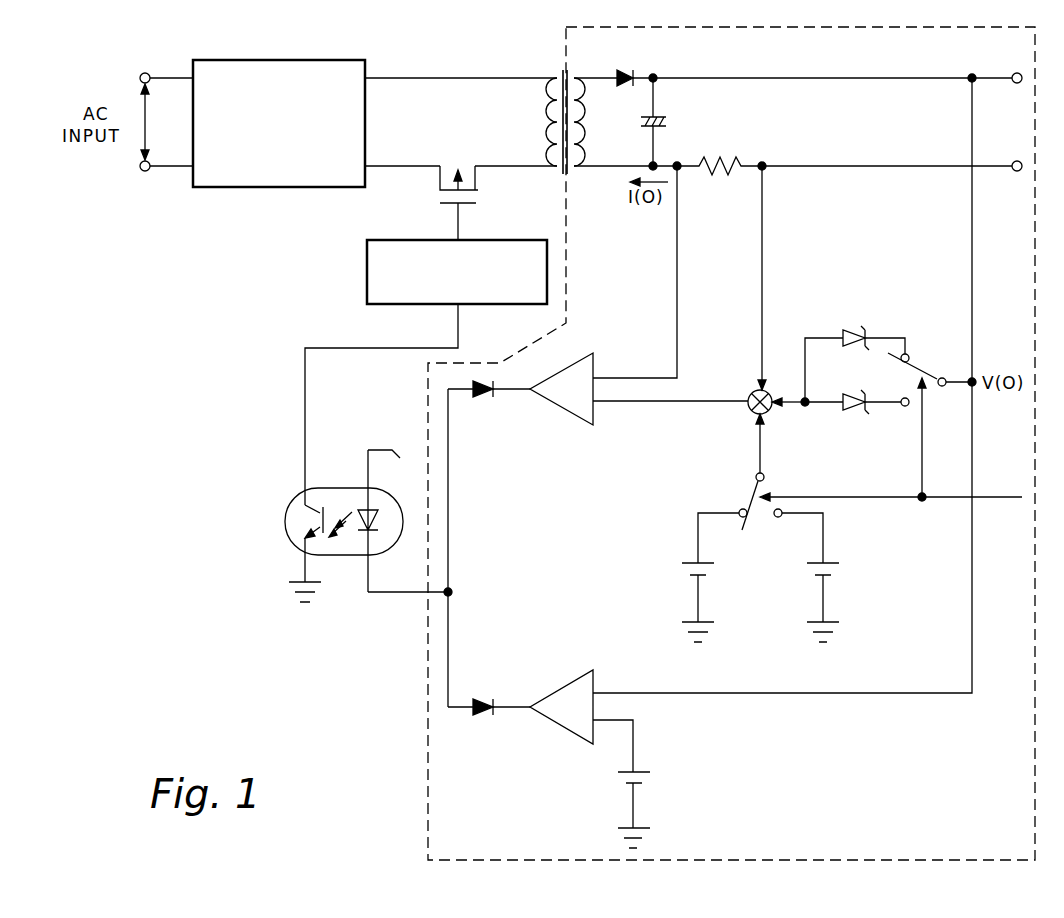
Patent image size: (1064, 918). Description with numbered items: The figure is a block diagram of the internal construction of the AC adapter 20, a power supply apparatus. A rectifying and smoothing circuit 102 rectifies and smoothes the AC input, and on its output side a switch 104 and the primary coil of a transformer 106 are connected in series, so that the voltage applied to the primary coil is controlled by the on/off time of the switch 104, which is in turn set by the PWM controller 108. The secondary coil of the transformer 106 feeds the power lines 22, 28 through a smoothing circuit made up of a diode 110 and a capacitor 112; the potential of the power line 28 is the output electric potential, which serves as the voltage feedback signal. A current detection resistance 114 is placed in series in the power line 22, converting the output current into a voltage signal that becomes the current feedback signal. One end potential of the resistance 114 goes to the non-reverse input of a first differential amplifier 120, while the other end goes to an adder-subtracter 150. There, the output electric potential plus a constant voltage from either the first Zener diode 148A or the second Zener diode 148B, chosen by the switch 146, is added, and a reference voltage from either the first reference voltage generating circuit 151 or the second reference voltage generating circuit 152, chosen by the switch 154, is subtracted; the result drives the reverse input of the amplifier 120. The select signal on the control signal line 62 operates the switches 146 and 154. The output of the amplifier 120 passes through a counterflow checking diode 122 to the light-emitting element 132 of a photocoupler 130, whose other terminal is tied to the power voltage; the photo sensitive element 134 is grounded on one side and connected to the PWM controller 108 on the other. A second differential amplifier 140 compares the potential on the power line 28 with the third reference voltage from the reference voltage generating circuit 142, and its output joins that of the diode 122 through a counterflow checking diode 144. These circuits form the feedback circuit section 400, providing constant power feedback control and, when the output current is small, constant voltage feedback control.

The AC adapter 20 is at (131, 338).
The power line 22 is at (987, 166).
The power line 28 is at (987, 78).
The control signal line 62 is at (984, 498).
The rectifying and smoothing circuit 102 is at (245, 187).
The switch 104 is at (440, 203).
The transformer 106 is at (557, 172).
The PWM controller 108 is at (367, 287).
The diode 110 is at (626, 70).
The capacitor 112 is at (662, 116).
The current detection resistance 114 is at (742, 161).
The first differential amplifier 120 is at (580, 422).
The counterflow checking diode 122 is at (486, 397).
The photocoupler 130 is at (285, 510).
The light-emitting element 132 is at (352, 494).
The photo sensitive element 134 is at (314, 520).
The second differential amplifier 140 is at (583, 673).
The reference voltage generating circuit 142 is at (626, 775).
The counterflow checking diode 144 is at (485, 700).
The switch 146 is at (939, 378).
The first Zener diode 148A is at (842, 333).
The second Zener diode 148B is at (843, 408).
The adder-subtracter 150 is at (750, 394).
The first reference voltage generating circuit 151 is at (706, 569).
The second reference voltage generating circuit 152 is at (831, 569).
The switch 154 is at (746, 500).
The feedback circuit section 400 is at (428, 745).